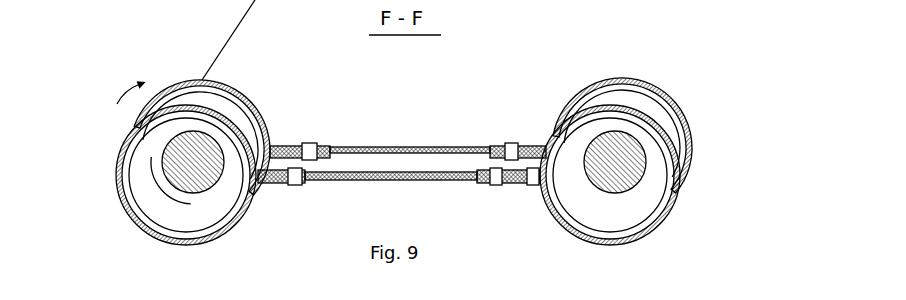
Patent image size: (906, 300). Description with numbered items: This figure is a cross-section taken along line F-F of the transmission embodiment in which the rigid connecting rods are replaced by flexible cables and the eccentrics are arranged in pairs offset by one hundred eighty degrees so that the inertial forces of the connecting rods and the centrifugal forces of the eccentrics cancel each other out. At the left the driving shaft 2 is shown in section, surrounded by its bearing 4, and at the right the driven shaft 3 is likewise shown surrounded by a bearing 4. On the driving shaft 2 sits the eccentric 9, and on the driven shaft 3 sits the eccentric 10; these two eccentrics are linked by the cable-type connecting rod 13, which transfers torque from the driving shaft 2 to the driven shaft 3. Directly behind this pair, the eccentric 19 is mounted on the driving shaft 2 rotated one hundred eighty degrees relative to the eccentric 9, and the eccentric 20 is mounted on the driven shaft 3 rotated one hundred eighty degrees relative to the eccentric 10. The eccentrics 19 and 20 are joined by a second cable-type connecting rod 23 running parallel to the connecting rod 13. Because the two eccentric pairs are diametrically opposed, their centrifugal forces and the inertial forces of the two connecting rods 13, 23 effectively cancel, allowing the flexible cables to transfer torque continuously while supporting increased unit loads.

The driving shaft 2 is at (176, 149).
The driven shaft 3 is at (630, 155).
The bearing 4 is at (143, 224).
The eccentric of the driving shaft 9 is at (153, 138).
The eccentric of the driven shaft 10 is at (637, 199).
The cable-type connecting rod 13 is at (443, 173).
The eccentric 19 is at (198, 100).
The eccentric 20 is at (660, 118).
The cable-type connecting rod 23 is at (329, 143).